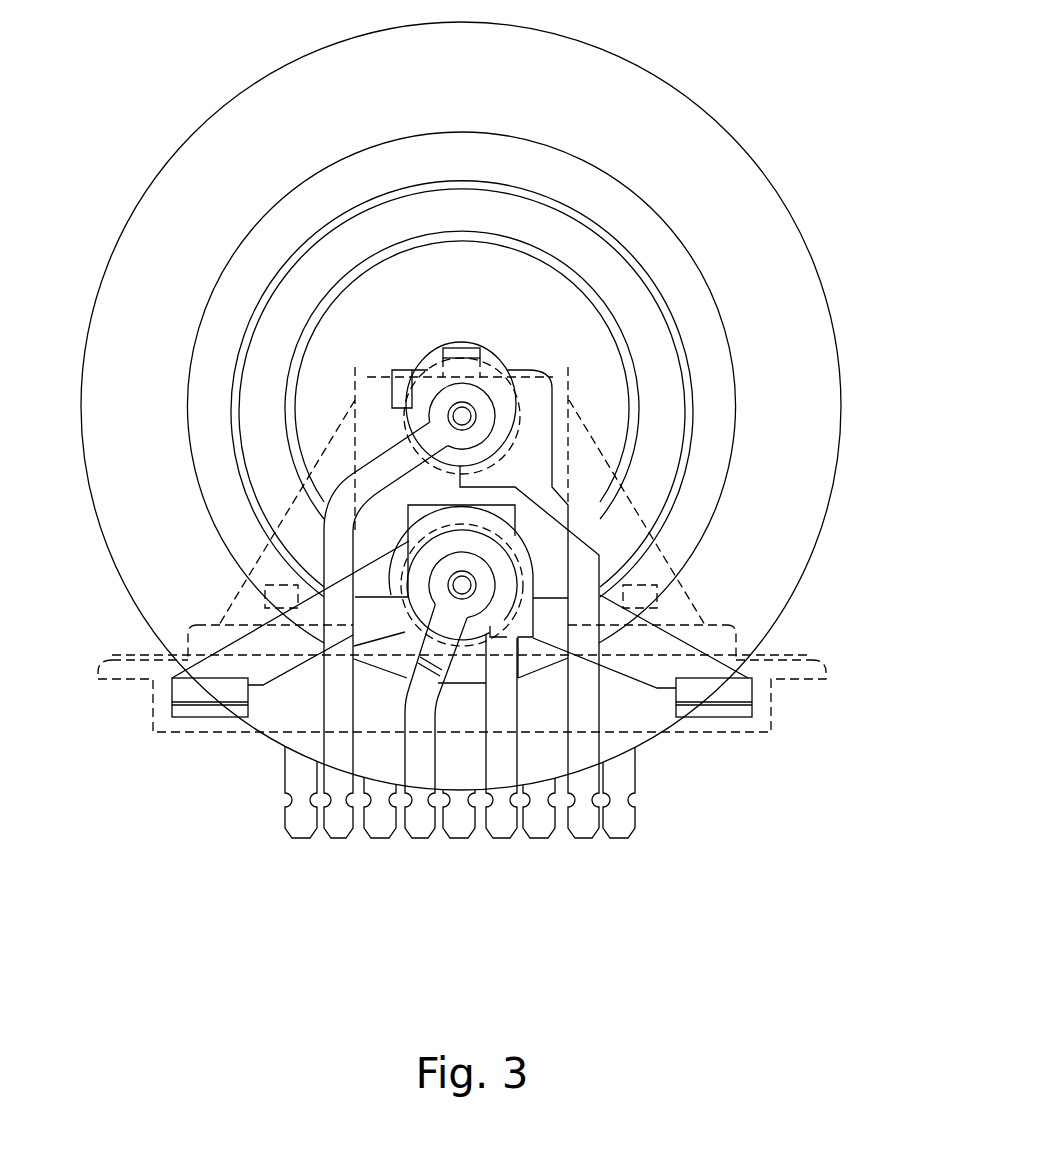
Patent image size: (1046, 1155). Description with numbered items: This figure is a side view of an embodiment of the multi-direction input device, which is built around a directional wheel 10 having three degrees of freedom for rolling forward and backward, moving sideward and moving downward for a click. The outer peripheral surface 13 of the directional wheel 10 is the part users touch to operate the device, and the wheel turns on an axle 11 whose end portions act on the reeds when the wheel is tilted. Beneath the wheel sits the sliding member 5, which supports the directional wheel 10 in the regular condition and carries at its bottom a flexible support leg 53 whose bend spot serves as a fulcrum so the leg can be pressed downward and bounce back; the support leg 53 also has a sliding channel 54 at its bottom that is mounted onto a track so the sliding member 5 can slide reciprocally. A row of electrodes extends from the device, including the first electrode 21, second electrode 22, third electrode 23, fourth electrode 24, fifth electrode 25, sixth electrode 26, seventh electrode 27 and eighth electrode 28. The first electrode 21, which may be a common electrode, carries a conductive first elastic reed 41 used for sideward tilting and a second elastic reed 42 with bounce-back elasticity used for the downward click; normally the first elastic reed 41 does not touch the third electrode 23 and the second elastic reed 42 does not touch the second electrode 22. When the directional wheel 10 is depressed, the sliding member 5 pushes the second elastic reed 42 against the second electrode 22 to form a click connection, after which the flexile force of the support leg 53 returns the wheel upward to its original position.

The directional wheel 10 is at (653, 62).
The peripheral surface 13 is at (682, 122).
The axle 11 is at (513, 338).
The first elastic reed 41 is at (513, 397).
The second elastic reed 42 is at (503, 550).
The sliding member 5 is at (745, 633).
The support leg 53 is at (272, 638).
The sliding channel 54 is at (207, 708).
The first electrode 21 is at (585, 838).
The second electrode 22 is at (420, 838).
The third electrode 23 is at (340, 838).
The fourth electrode 24 is at (302, 838).
The fifth electrode 25 is at (382, 838).
The sixth electrode 26 is at (460, 838).
The seventh electrode 27 is at (540, 838).
The eighth electrode 28 is at (622, 838).